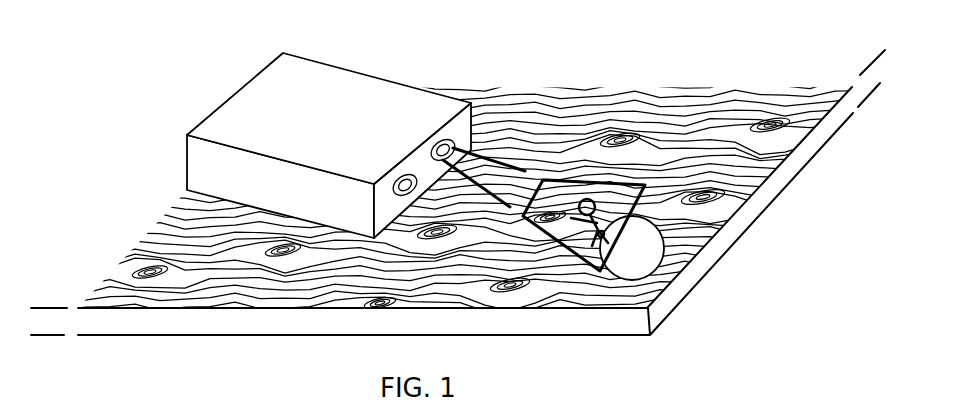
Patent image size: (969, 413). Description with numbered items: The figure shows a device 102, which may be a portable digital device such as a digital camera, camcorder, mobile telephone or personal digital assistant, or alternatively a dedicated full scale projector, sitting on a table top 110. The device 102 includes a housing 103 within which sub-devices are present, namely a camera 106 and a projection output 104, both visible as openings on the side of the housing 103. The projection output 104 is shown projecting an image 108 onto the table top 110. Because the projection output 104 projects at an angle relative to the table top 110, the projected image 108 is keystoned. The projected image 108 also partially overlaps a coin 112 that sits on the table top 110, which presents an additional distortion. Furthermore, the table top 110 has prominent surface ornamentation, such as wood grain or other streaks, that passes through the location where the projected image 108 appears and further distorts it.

The device 102 is at (356, 128).
The housing 103 is at (210, 115).
The projection output 104 is at (440, 143).
The camera 106 is at (401, 176).
The projected image 108 is at (583, 188).
The table top 110 is at (680, 112).
The coin 112 is at (643, 256).